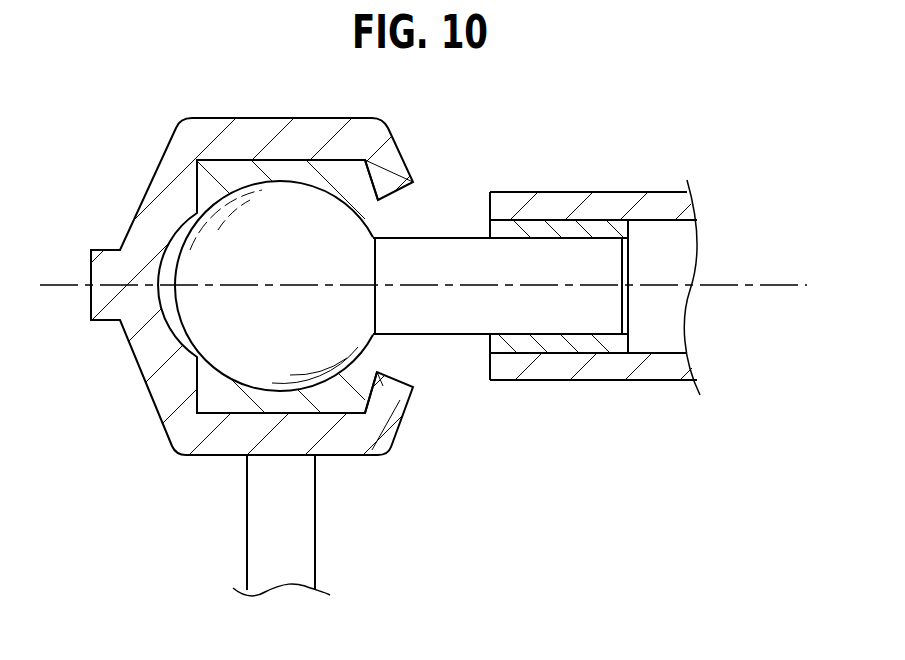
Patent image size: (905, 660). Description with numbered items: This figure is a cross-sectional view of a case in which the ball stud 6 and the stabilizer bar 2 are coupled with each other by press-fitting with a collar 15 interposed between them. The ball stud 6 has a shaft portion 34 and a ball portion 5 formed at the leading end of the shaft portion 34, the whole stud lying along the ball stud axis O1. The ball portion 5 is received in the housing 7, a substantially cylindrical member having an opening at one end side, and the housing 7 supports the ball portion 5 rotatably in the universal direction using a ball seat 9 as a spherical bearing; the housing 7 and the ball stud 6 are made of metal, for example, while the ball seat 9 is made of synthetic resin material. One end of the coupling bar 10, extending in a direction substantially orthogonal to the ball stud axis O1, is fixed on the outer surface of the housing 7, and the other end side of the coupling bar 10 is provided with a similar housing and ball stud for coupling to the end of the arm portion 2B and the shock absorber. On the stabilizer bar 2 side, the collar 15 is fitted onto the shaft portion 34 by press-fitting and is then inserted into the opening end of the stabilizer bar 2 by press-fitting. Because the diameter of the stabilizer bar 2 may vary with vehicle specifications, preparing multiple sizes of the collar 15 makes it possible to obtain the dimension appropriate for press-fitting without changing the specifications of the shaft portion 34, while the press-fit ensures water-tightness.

The stabilizer bar 2 is at (452, 330).
The arm portion 2B is at (608, 200).
The ball portion 5 is at (218, 315).
The ball stud 6 is at (440, 347).
The housing 7 is at (165, 394).
The ball seat 9 is at (229, 172).
The coupling bar 10 is at (268, 528).
The collar 15 is at (528, 228).
The shaft portion 34 is at (445, 256).
The ball stud axis O1 is at (792, 283).